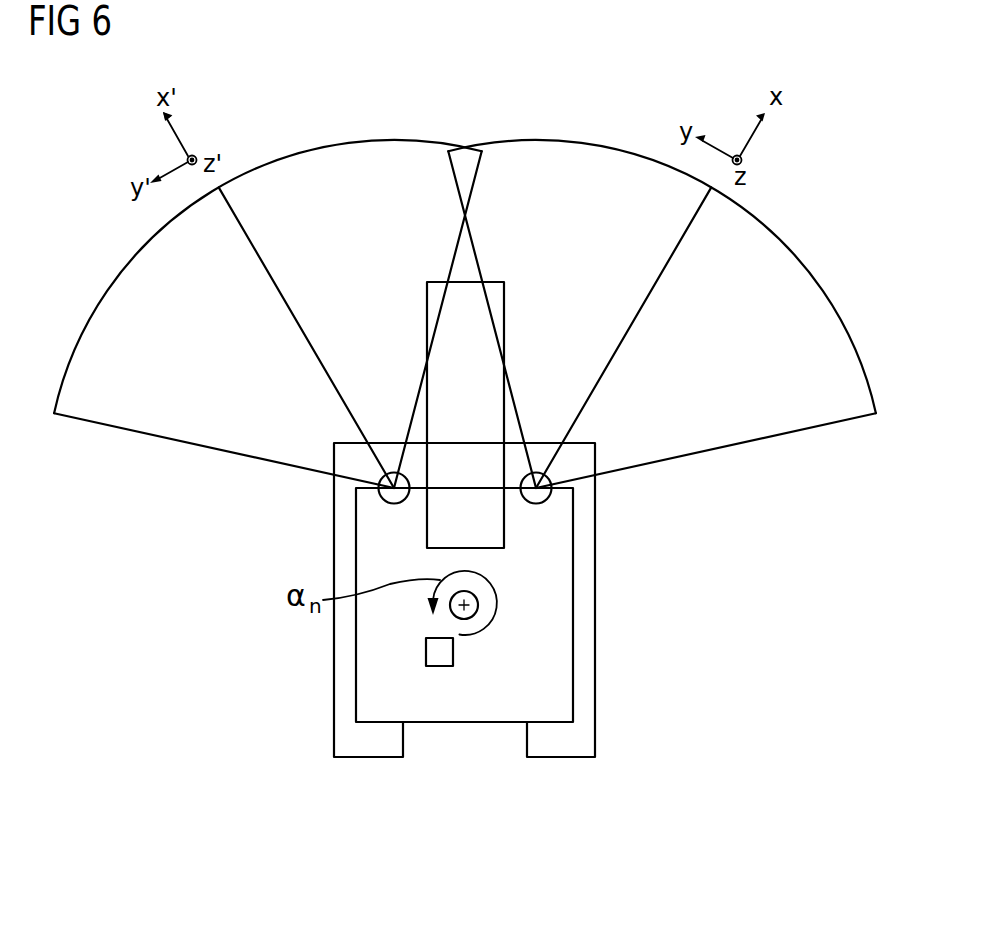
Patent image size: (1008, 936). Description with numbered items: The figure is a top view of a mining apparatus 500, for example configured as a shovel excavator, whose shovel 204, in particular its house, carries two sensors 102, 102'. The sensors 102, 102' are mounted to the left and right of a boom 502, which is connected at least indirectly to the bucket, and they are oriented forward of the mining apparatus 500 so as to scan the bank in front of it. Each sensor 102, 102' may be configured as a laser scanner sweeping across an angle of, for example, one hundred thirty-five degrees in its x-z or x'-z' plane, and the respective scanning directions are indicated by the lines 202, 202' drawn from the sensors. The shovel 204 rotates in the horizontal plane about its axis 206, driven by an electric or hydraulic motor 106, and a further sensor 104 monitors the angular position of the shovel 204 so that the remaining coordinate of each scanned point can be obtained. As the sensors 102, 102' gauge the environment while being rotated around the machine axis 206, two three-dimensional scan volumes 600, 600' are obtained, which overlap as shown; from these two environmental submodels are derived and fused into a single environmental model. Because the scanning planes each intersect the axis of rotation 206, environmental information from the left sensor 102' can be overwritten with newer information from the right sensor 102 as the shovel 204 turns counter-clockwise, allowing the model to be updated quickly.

The 3D scan volume 600' is at (257, 314).
The 3D scan volume 600 is at (672, 314).
The sensor axis of first sensor 202' is at (291, 337).
The sensor axis of second sensor 202 is at (638, 337).
The sensor 102' is at (339, 498).
The sensor 102 is at (587, 498).
The boom 502 is at (492, 530).
The shovel 204 is at (370, 661).
The mining apparatus 500 is at (291, 728).
The axis 206 is at (471, 614).
The further sensor 104 is at (437, 657).
The electric or hydraulic motor 106 is at (470, 617).